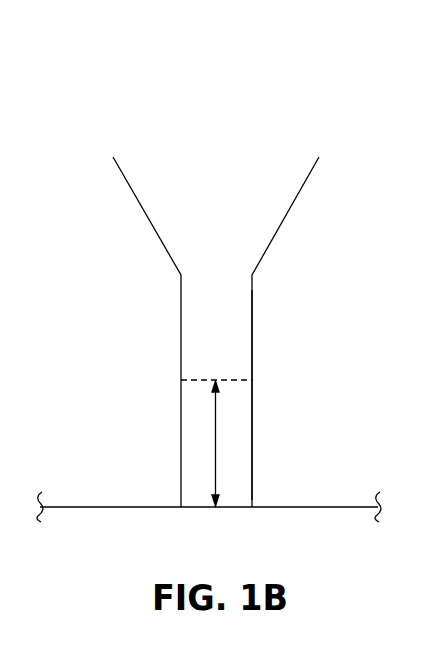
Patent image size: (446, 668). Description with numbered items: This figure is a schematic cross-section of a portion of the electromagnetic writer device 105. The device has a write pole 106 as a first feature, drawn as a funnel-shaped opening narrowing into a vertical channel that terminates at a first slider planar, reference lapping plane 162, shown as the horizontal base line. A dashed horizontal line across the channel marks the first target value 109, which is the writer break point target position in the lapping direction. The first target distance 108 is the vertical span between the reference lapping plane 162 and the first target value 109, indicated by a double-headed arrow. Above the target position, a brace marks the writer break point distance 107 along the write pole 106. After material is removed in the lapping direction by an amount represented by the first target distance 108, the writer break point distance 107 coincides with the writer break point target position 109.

The electromagnetic writer device 105 is at (347, 95).
The write pole 106 is at (232, 334).
The writer break point distance 107 is at (174, 279).
The first target distance 108 is at (217, 442).
The first target value 109 is at (227, 380).
The reference lapping plane 162 is at (80, 507).